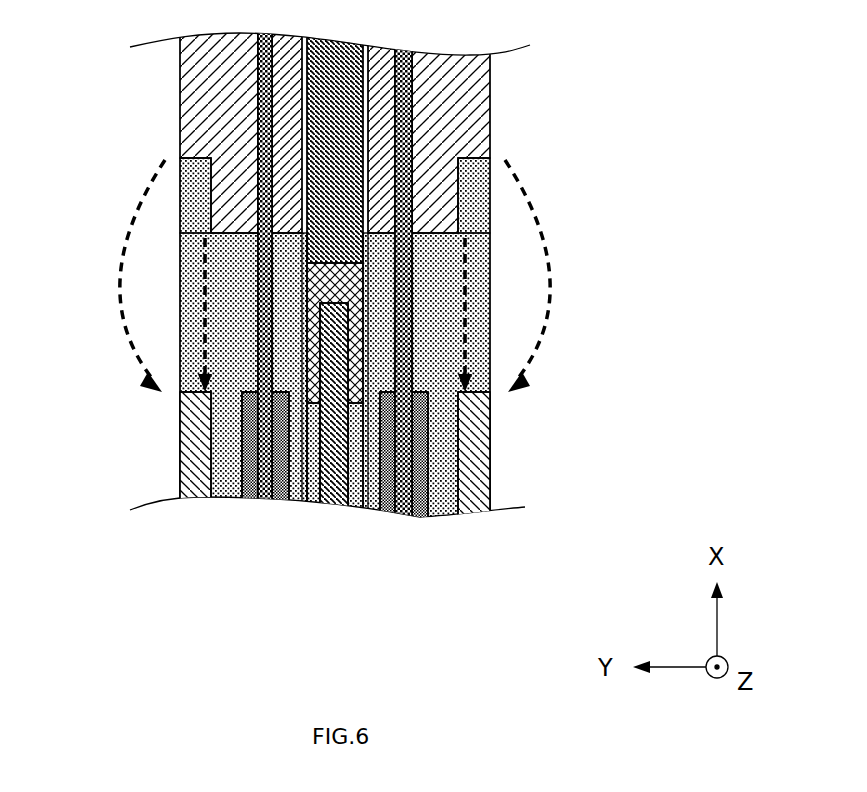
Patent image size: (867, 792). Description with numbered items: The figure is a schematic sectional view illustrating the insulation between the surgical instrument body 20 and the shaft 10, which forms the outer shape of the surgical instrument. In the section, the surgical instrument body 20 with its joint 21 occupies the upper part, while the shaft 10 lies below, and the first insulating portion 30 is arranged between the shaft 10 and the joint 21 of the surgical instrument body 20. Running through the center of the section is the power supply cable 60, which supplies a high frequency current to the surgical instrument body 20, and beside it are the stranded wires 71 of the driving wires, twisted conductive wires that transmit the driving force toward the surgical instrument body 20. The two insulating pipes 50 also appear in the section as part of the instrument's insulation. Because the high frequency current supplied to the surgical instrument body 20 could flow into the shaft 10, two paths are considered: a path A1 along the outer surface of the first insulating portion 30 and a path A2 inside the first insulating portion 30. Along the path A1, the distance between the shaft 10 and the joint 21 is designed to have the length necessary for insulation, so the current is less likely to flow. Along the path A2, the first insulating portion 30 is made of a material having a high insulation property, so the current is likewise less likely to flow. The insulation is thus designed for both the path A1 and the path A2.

The shaft 10 is at (371, 502).
The surgical instrument body 20 is at (140, 91).
The joint 21 is at (490, 102).
The first insulating portion 30 is at (180, 261).
The insulating pipe 50 is at (240, 478).
The power supply cable 60 is at (330, 505).
The stranded wire 71 is at (262, 500).
The path A1 is at (130, 212).
The path A2 is at (185, 296).